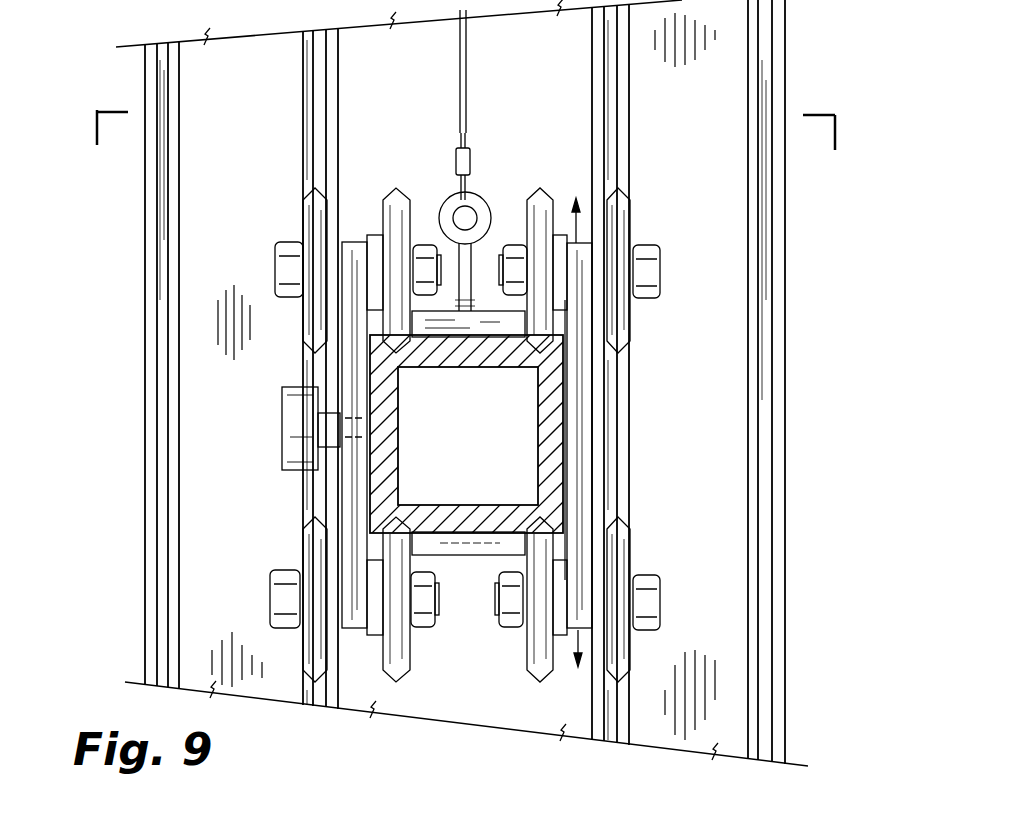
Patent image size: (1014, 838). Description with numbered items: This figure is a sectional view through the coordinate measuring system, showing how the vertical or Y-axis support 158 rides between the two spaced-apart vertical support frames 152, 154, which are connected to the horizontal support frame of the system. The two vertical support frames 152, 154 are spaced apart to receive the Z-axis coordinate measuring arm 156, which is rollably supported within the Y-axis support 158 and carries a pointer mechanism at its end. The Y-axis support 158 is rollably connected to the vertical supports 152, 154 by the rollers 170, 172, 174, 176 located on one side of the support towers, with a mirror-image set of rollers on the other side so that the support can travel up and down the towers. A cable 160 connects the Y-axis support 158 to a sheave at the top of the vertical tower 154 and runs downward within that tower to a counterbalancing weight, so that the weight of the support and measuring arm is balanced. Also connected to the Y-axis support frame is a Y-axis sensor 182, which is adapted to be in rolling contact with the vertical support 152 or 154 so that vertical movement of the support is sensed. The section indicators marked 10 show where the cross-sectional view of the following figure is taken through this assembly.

The section line 10- 10 is at (469, 131).
The vertical support frame 152 is at (696, 156).
The vertical support frame 154 is at (246, 156).
The Z-axis coordinate measuring arm 156 is at (390, 430).
The Y-axis support 158 is at (580, 452).
The cable 160 is at (466, 130).
The roller 170 is at (310, 212).
The roller 172 is at (305, 548).
The roller 174 is at (628, 216).
The roller 176 is at (628, 548).
The Y-axis sensor 182 is at (290, 437).